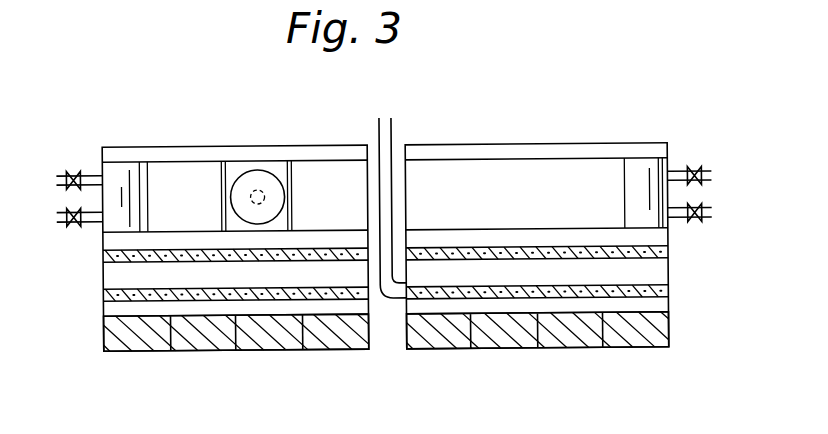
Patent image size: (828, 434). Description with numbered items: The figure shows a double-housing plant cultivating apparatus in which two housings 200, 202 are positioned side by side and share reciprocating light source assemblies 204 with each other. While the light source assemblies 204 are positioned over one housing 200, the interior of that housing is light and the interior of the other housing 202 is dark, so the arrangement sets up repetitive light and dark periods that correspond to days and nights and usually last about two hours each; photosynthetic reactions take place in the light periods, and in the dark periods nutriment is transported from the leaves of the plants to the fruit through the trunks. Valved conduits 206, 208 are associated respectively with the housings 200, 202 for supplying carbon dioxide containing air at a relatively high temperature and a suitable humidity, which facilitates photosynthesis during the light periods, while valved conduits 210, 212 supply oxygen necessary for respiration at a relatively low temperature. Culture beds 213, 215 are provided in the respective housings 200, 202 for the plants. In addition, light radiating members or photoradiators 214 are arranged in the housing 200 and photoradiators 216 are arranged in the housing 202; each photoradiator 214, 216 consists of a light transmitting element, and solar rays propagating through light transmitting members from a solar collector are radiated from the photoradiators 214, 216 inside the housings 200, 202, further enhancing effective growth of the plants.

The housing 200 is at (223, 353).
The housing 202 is at (463, 348).
The light source assembly 204 is at (260, 170).
The valved conduit 206 is at (64, 176).
The valved conduit 208 is at (706, 168).
The valved conduit 210 is at (65, 228).
The valved conduit 212 is at (708, 219).
The culture bed 213 is at (322, 350).
The photoradiator 214 is at (168, 300).
The culture bed 215 is at (638, 339).
The photoradiator 216 is at (487, 282).